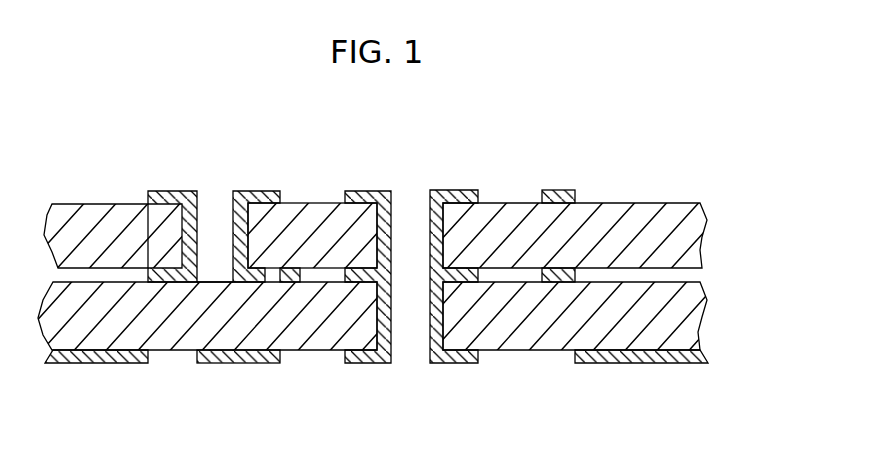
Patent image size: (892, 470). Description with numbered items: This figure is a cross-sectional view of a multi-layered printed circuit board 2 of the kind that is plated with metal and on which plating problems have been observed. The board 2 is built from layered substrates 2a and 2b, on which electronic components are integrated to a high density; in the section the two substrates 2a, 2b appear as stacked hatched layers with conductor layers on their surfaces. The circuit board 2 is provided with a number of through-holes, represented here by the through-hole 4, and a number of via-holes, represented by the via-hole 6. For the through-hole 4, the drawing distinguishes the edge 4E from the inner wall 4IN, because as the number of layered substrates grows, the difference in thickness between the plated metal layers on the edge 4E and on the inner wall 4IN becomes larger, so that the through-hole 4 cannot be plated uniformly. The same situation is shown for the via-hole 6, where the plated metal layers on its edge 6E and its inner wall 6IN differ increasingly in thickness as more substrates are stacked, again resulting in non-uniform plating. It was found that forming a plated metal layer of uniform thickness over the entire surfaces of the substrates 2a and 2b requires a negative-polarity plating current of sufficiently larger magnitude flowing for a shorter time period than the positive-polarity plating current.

The multi-layered printed circuit board 2 is at (414, 119).
The substrate 2a is at (693, 235).
The substrate 2b is at (690, 307).
The through-hole 4 is at (407, 208).
The edge of the through-hole 4E is at (423, 362).
The inner wall of the through-hole 4IN is at (407, 270).
The via-hole 6 is at (208, 205).
The edge of the via-hole 6E is at (200, 190).
The inner wall of the via-hole 6IN is at (233, 243).